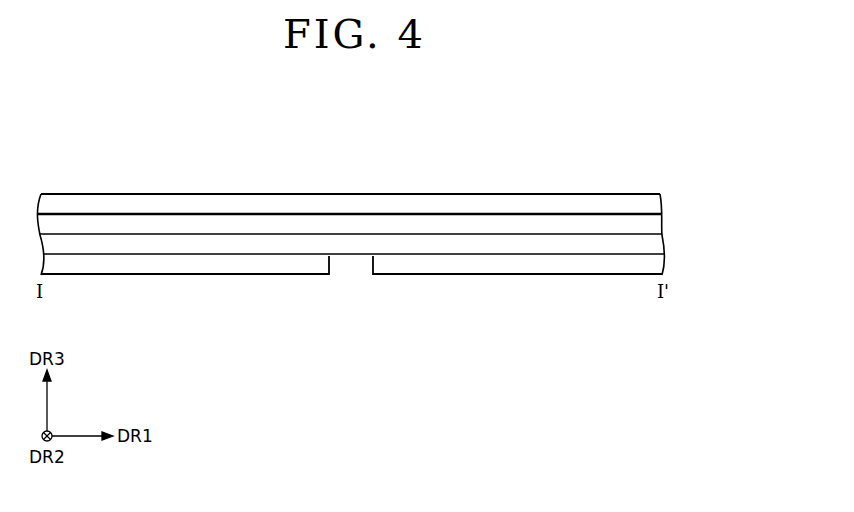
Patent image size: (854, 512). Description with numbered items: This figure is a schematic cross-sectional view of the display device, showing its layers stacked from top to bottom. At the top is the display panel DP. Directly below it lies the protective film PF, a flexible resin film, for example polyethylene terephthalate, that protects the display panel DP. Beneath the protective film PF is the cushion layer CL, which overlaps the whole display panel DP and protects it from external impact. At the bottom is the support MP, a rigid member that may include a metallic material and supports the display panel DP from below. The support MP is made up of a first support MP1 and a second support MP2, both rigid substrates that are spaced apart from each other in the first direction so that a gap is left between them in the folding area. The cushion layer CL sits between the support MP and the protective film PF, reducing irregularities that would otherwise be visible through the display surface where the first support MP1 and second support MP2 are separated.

The display panel DP is at (652, 203).
The protective film PF is at (652, 224).
The cushion layer CL is at (652, 244).
The support MP is at (351, 320).
The first support MP1 is at (293, 265).
The second support MP2 is at (517, 296).